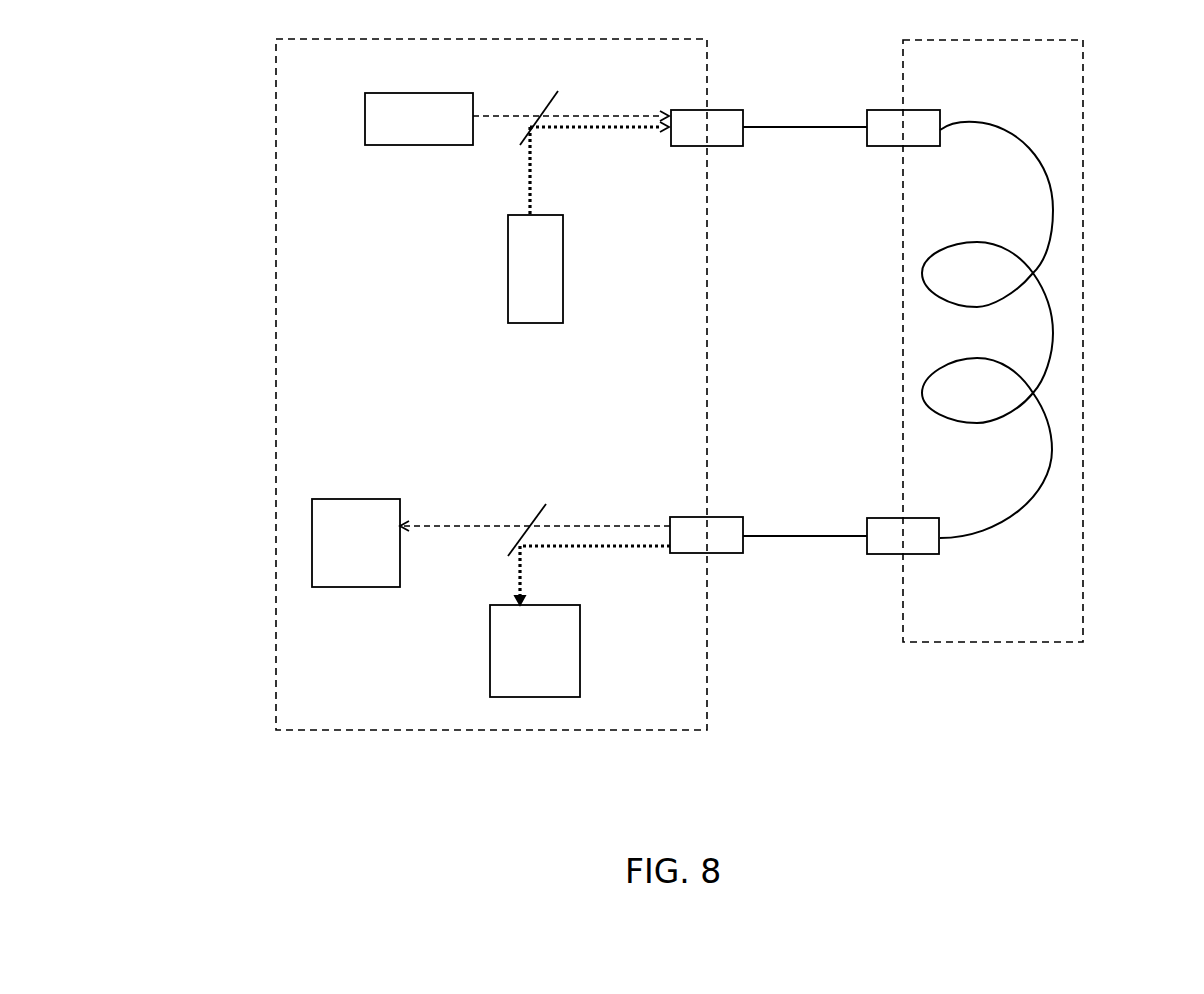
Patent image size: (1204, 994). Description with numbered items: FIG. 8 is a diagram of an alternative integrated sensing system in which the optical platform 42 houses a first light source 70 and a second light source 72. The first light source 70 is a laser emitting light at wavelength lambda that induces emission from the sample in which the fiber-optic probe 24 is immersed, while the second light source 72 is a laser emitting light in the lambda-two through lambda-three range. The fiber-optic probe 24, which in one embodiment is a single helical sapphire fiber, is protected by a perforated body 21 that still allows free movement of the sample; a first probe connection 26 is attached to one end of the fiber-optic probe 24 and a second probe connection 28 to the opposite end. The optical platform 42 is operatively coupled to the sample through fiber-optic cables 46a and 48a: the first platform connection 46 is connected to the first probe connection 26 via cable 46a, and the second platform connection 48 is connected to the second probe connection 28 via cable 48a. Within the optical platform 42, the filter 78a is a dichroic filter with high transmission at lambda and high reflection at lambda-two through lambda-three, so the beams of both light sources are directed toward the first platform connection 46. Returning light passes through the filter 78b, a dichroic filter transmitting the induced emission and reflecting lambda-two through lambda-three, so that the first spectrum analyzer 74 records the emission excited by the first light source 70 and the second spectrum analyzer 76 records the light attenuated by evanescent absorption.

The perforated body 21 is at (1083, 385).
The fiber-optic probe 24 is at (1042, 285).
The first probe connection 26 is at (883, 148).
The second probe connection 28 is at (880, 556).
The optical platform 42 is at (276, 365).
The first platform connection 46 is at (685, 148).
The fiber-optic cable 46a is at (794, 128).
The second platform connection 48 is at (695, 554).
The fiber-optic cable 48a is at (797, 537).
The first light source 70 is at (419, 119).
The second light source 72 is at (535, 269).
The first spectrum analyzer 74 is at (356, 543).
The second spectrum analyzer 76 is at (535, 651).
The filter 78a is at (537, 123).
The filter 78b is at (535, 520).